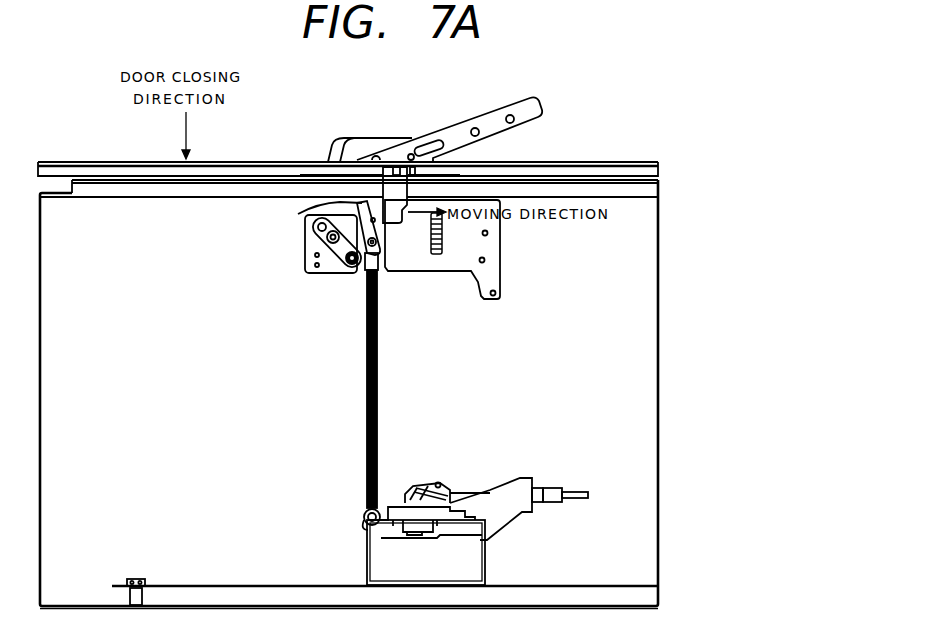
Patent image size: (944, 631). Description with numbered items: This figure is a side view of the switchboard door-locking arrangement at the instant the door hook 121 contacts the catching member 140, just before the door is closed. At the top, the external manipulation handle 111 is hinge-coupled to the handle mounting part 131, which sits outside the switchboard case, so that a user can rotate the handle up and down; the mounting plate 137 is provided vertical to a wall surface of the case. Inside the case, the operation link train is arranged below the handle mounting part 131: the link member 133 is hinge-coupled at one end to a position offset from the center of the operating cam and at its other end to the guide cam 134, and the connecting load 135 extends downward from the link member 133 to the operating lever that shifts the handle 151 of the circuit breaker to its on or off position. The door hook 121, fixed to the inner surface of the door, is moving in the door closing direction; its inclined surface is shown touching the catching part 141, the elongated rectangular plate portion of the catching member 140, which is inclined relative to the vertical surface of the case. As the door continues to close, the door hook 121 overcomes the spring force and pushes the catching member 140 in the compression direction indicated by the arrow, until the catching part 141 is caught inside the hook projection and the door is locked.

The external manipulation handle 111 is at (480, 113).
The door hook 121 is at (390, 220).
The handle mounting part 131 is at (358, 142).
The link member 133 is at (318, 208).
The guide cam 134 is at (330, 262).
The connecting load 135 is at (365, 350).
The mounting plate 137 is at (443, 273).
The catching part 141 is at (501, 232).
The catching member 140 is at (436, 233).
The handle 151 is at (405, 503).